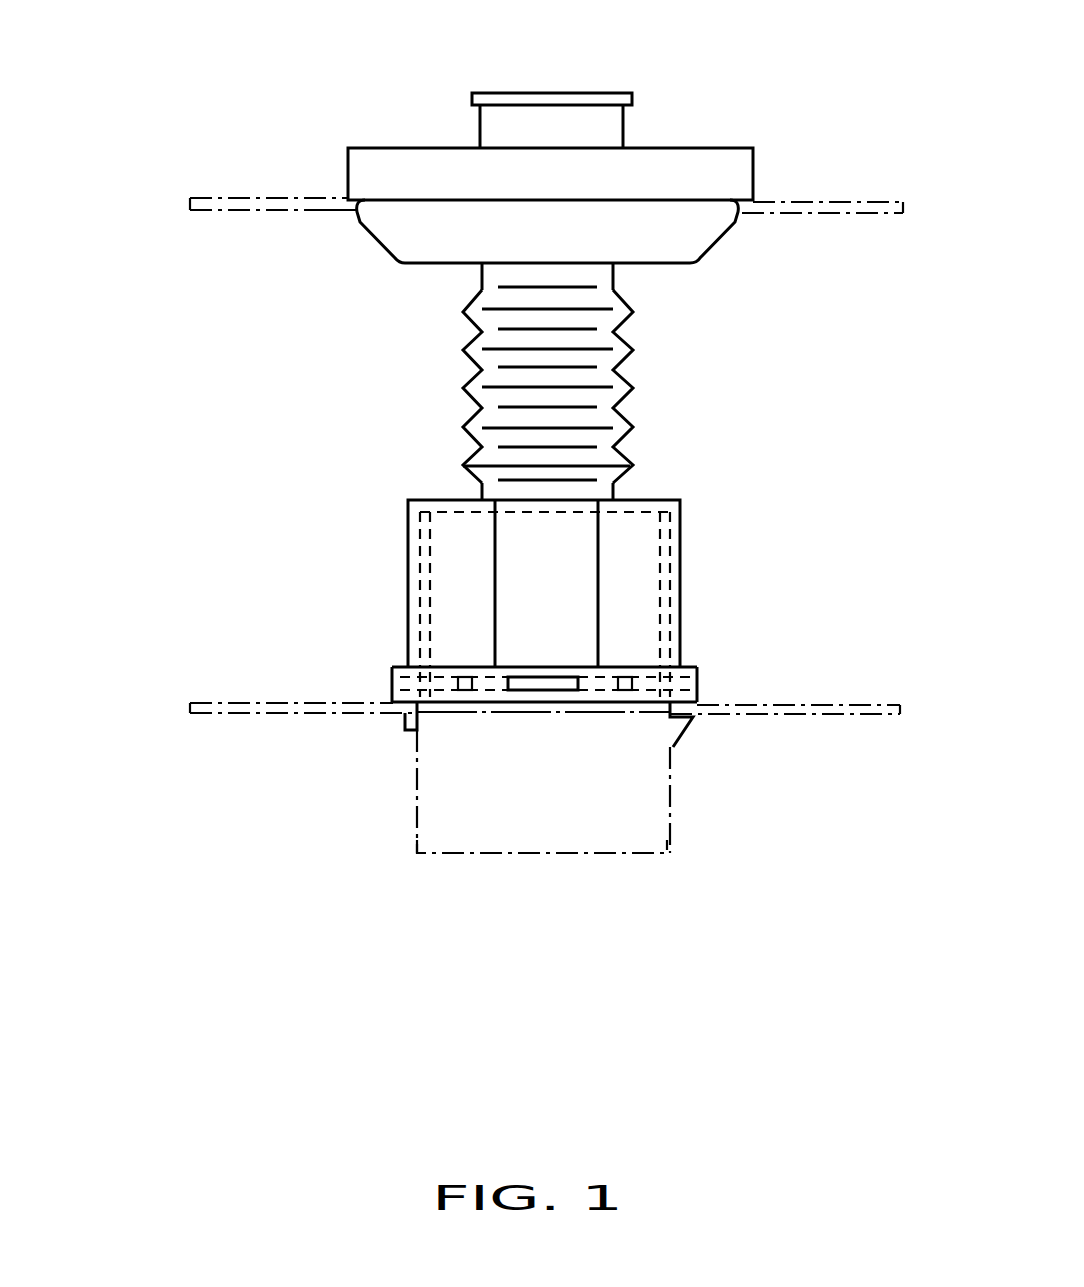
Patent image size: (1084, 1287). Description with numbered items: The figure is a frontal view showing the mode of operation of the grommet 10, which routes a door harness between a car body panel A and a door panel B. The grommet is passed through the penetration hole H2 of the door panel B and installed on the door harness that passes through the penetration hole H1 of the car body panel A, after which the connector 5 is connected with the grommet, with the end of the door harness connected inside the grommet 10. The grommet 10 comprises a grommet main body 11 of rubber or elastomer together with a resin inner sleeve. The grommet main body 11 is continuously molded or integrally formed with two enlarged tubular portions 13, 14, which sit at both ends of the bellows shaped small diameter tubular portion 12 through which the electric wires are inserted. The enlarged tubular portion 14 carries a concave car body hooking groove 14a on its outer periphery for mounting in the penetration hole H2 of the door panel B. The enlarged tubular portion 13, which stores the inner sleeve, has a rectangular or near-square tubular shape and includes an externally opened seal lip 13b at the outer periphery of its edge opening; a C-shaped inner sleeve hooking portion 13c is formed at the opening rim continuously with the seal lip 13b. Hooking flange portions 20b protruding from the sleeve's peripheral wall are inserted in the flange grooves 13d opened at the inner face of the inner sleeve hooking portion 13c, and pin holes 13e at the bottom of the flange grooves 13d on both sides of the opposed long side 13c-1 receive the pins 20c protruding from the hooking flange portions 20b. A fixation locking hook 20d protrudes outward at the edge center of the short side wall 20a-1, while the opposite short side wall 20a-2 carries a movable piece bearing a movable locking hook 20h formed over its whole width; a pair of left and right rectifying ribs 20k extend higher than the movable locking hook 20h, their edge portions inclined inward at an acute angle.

The grommet 10 is at (262, 65).
The enlarged tubular portion 14 is at (786, 164).
The car body hooking groove 14a is at (360, 220).
The grommet main body 11 is at (688, 308).
The bellows shaped small diameter tubular portion 12 is at (638, 341).
The enlarged tubular portion 13 is at (725, 558).
The inner sleeve hooking portion 13c is at (392, 667).
The seal lip 13b is at (393, 703).
The flange grooves 13d is at (685, 665).
The opposed long side 13c-1 is at (613, 667).
The pin holes 13e is at (462, 676).
The short side wall 20a-1 is at (405, 554).
The short side wall 20a-2 is at (688, 517).
The hooking flange portions 20b is at (700, 687).
The pins 20c is at (462, 700).
The fixation locking hook 20d is at (407, 724).
The movable locking hook 20h is at (690, 718).
The rectifying ribs 20k is at (677, 737).
The connector 5 is at (533, 857).
The car body panel A is at (282, 702).
The door panel B is at (232, 209).
The penetration hole H1 is at (393, 713).
The penetration hole H2 is at (330, 209).